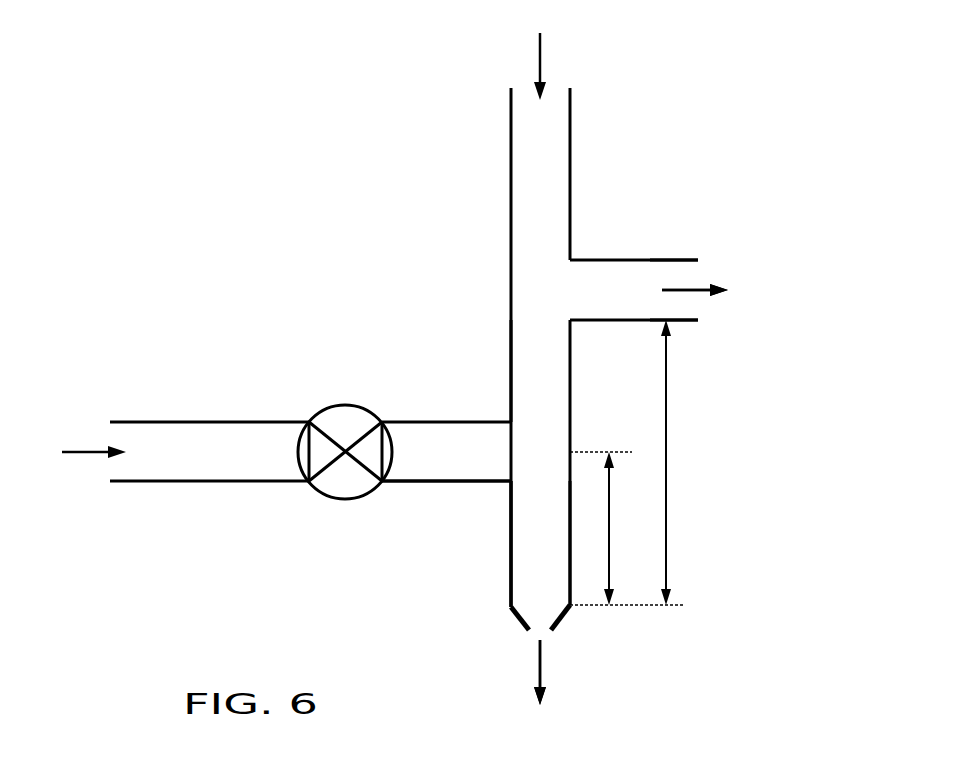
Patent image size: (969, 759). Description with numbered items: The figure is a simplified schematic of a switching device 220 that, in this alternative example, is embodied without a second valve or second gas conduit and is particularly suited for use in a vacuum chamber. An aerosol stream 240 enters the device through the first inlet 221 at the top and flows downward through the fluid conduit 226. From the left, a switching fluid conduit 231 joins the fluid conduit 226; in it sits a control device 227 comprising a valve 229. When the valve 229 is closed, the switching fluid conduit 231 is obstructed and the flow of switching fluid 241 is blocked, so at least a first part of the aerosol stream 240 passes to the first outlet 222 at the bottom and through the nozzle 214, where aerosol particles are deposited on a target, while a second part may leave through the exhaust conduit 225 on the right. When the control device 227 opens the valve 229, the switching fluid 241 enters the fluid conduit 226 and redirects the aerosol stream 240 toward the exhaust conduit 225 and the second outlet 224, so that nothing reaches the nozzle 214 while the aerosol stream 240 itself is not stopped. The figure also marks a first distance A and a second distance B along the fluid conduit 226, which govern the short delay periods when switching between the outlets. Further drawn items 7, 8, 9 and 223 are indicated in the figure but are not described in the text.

The switching device 220 is at (278, 160).
The first inlet 221 is at (530, 184).
The pipe wall 8 is at (570, 133).
The exhaust conduit 225 is at (628, 260).
The outlet branch 9 is at (690, 260).
The second outlet 224 is at (685, 305).
The fluid conduit 226 is at (511, 370).
The second pipe 7 is at (143, 422).
The second pipe lower wall 223 is at (173, 452).
The control device 227 is at (340, 500).
The valve 229 is at (312, 458).
The switching fluid conduit 231 is at (450, 482).
The first outlet 222 is at (532, 562).
The nozzle 214 is at (555, 620).
The aerosol stream 240 is at (540, 48).
The switching fluid 241 is at (90, 450).